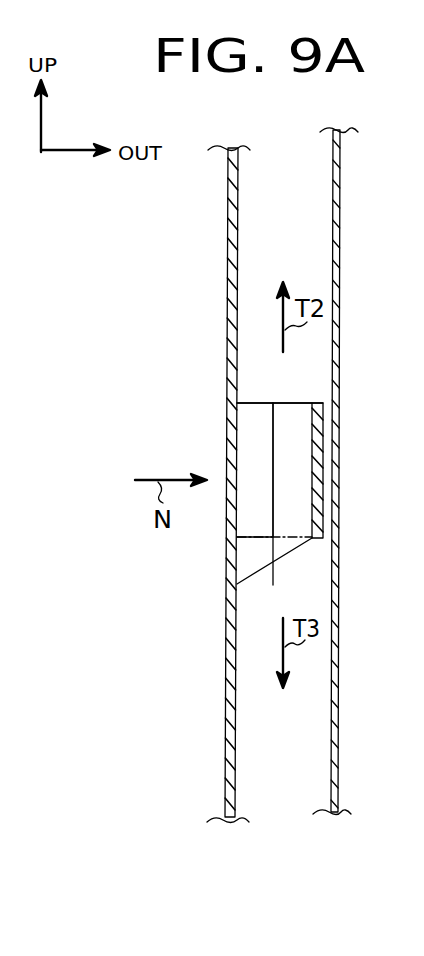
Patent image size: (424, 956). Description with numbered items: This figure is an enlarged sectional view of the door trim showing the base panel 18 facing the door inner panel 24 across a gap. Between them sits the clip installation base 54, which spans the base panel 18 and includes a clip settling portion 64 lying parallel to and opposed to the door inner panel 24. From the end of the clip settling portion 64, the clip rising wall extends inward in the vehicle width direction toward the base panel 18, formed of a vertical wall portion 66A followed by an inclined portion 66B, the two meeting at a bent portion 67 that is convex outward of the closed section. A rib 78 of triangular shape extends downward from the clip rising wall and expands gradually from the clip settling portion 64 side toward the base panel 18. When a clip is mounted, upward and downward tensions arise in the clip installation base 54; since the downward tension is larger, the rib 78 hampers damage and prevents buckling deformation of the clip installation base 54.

The base panel 18 is at (228, 265).
The door inner panel 24 is at (342, 237).
The clip installation base 54 is at (249, 459).
The vertical wall portion 66A is at (293, 417).
The inclined portion 66B is at (245, 429).
The clip settling portion 64 is at (317, 468).
The bent portion 67 is at (273, 504).
The rib 78 is at (258, 565).